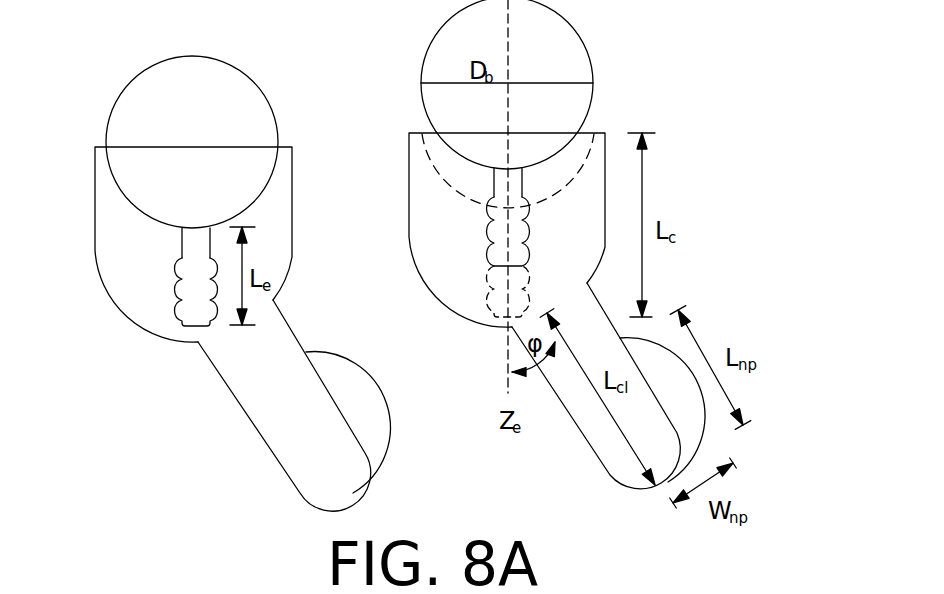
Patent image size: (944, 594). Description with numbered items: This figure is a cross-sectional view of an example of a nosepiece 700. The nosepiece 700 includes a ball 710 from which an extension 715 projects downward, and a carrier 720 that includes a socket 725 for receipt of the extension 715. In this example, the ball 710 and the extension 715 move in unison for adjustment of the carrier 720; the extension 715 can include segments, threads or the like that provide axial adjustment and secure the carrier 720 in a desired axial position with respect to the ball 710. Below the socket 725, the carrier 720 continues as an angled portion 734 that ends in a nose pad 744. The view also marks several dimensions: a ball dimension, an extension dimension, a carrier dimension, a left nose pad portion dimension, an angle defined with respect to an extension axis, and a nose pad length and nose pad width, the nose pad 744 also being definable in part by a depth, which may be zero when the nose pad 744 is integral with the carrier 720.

The nosepiece 700 is at (100, 33).
The ball 710 is at (132, 100).
The extension 715 is at (192, 258).
The carrier 720 is at (122, 303).
The socket 725 is at (178, 270).
The neck 734 is at (273, 447).
The nose pad 744 is at (365, 383).